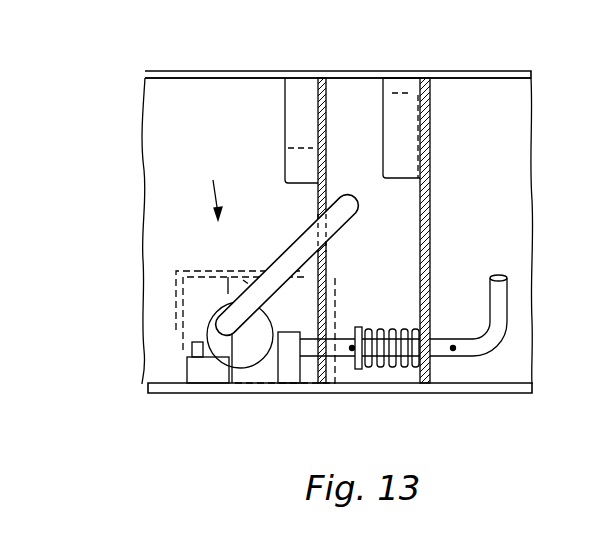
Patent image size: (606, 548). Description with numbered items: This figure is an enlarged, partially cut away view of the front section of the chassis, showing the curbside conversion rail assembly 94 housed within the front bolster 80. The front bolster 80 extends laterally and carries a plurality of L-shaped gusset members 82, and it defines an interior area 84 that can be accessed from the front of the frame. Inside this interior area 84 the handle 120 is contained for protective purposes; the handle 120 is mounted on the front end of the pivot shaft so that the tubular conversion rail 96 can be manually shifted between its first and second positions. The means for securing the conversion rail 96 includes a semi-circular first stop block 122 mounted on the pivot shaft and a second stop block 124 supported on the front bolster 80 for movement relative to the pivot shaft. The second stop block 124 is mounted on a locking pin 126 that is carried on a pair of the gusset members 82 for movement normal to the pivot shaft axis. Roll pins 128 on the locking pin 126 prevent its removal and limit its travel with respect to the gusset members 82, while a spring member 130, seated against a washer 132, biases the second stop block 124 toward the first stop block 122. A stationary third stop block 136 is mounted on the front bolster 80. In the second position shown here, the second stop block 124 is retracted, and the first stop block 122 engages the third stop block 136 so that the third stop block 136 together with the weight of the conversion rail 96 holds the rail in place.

The front bolster 80 is at (503, 70).
The L-shaped gusset members 82 is at (290, 103).
The interior area 84 is at (142, 197).
The conversion rail assembly 94 is at (206, 185).
The conversion rail 96 is at (178, 317).
The handle 120 is at (358, 208).
The first stop block 122 is at (303, 298).
The second stop block 124 is at (290, 372).
The locking pin 126 is at (500, 296).
The roll pins 128 is at (350, 355).
The spring member 130 is at (408, 357).
The washer 132 is at (357, 330).
The third stop block 136 is at (200, 365).